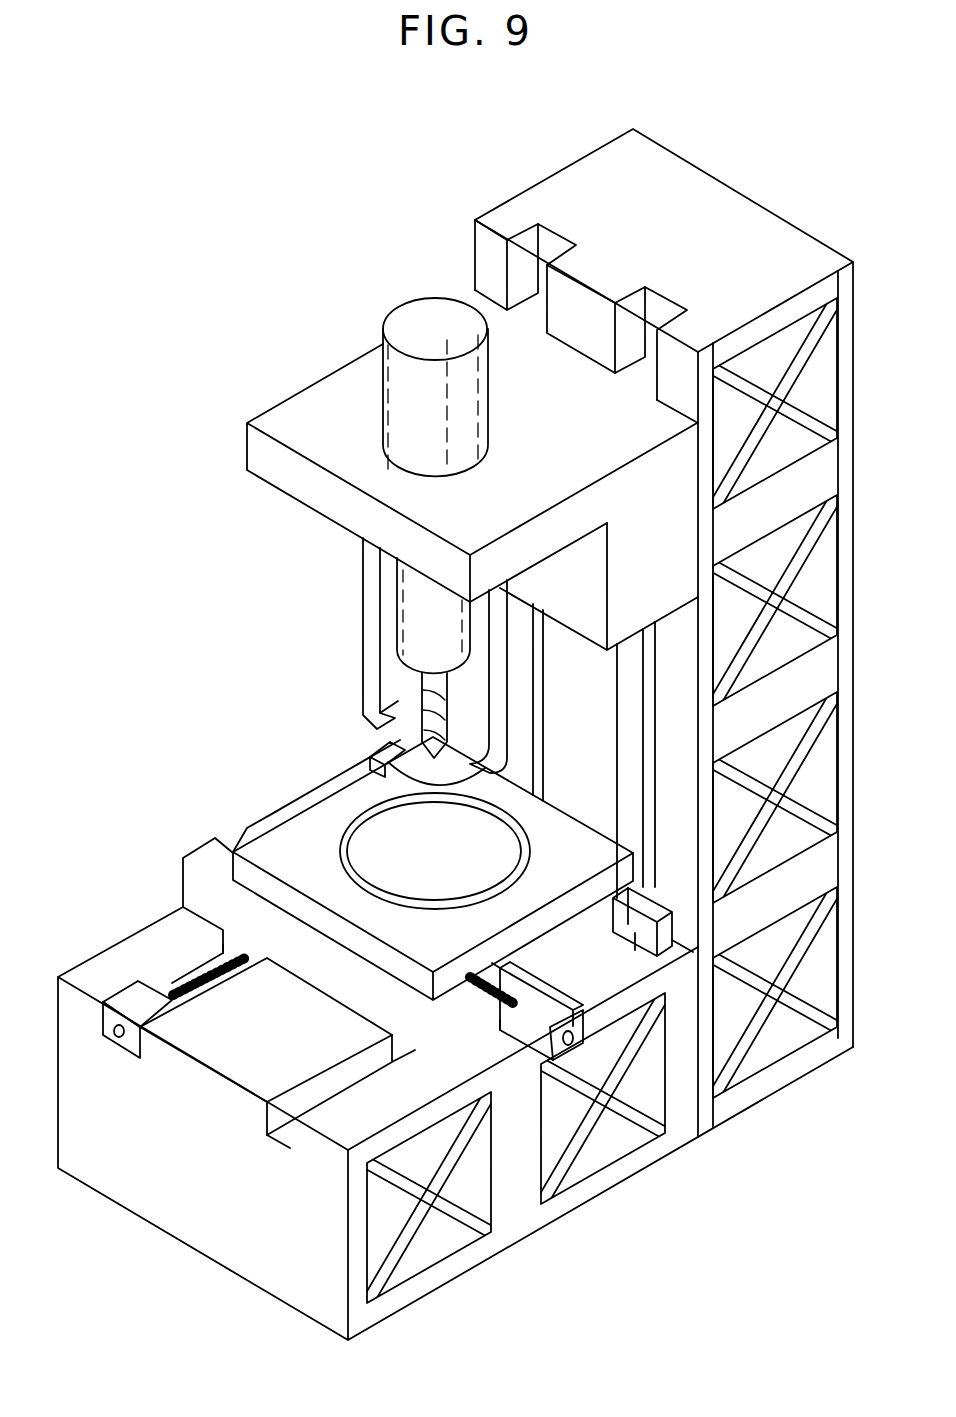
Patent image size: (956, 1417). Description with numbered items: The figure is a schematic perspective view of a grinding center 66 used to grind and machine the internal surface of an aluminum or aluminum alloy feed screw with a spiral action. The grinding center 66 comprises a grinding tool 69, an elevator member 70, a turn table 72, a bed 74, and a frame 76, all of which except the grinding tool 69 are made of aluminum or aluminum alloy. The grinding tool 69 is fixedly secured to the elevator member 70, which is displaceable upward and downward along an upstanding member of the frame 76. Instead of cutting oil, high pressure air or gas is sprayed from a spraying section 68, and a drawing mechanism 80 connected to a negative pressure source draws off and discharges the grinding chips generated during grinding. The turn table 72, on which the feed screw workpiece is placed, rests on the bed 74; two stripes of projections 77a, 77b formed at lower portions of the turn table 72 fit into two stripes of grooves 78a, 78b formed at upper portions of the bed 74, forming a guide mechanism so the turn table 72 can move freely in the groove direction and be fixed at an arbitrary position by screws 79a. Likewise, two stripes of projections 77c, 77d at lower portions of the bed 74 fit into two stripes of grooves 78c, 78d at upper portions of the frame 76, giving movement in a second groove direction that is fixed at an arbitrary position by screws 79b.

The grinding center 66 is at (270, 166).
The spraying section 68 is at (387, 747).
The grinding tool 69 is at (417, 618).
The elevator member 70 is at (302, 408).
The turn table 72 is at (273, 837).
The bed 74 is at (212, 893).
The frame 76 is at (685, 1072).
The projection 77a is at (483, 977).
The projection 77b is at (600, 913).
The projection 77c is at (353, 873).
The projection 77d is at (410, 1045).
The groove 78a is at (512, 995).
The groove 78b is at (653, 887).
The groove 78c is at (232, 968).
The groove 78d is at (303, 1133).
The screw 79a is at (467, 1095).
The screw 79b is at (198, 975).
The drawing mechanism 80 is at (388, 690).